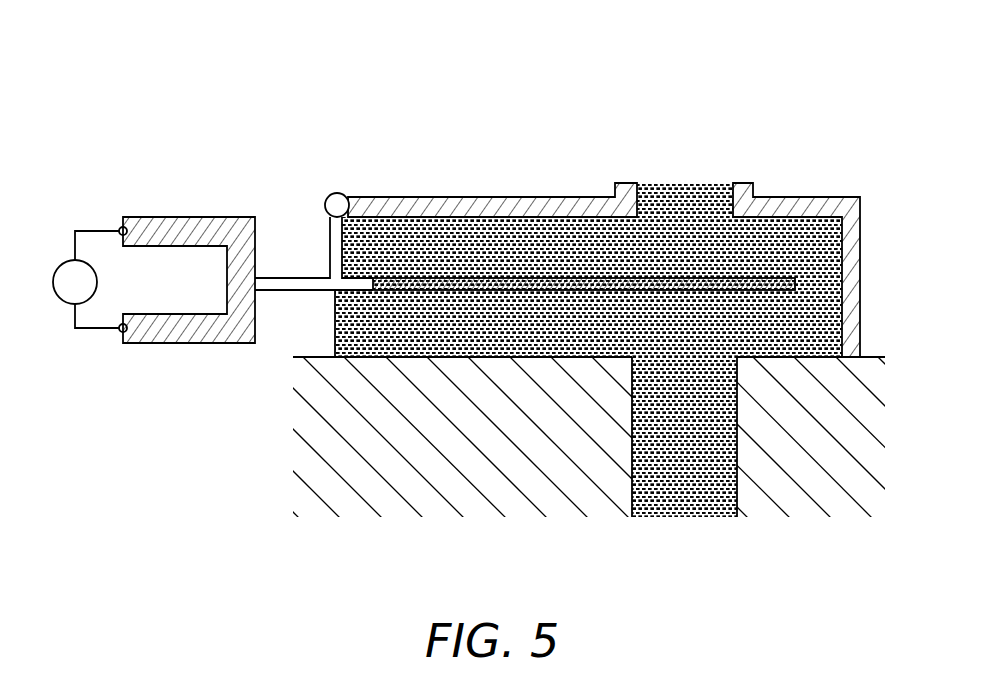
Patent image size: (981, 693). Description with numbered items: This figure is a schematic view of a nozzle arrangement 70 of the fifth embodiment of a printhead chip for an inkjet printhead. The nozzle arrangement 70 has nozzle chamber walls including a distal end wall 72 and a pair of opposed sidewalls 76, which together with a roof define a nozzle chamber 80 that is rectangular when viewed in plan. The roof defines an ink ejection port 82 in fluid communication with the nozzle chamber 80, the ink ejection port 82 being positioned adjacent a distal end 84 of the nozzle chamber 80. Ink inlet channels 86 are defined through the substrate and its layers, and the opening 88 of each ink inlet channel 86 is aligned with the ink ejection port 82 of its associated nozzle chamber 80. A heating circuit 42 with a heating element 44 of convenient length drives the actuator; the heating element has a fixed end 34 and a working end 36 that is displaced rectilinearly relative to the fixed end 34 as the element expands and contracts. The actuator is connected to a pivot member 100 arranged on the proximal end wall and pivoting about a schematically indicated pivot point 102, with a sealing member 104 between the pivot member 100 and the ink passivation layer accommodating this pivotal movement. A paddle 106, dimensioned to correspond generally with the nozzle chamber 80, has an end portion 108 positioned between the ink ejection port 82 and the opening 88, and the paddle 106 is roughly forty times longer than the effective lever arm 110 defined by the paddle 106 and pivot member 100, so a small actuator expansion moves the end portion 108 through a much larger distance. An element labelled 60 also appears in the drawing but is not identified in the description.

The fixed end 34 is at (123, 225).
The working end 36 is at (250, 217).
The heating circuit 42 is at (93, 230).
The heating element 44 is at (178, 217).
The nozzle plate 60 is at (418, 197).
The nozzle arrangement 70 is at (850, 107).
The distal end wall 72 is at (861, 242).
The sidewalls 76 is at (525, 233).
The nozzle chamber 80 is at (577, 233).
The ink ejection port 82 is at (697, 173).
The distal end 84 is at (800, 333).
The ink inlet channels 86 is at (693, 490).
The opening 88 is at (680, 373).
The pivot member 100 is at (357, 240).
The pivot point 102 is at (330, 194).
The sealing member 104 is at (333, 325).
The paddle 106 is at (437, 278).
The end portion 108 is at (777, 278).
The effective lever arm 110 is at (328, 243).